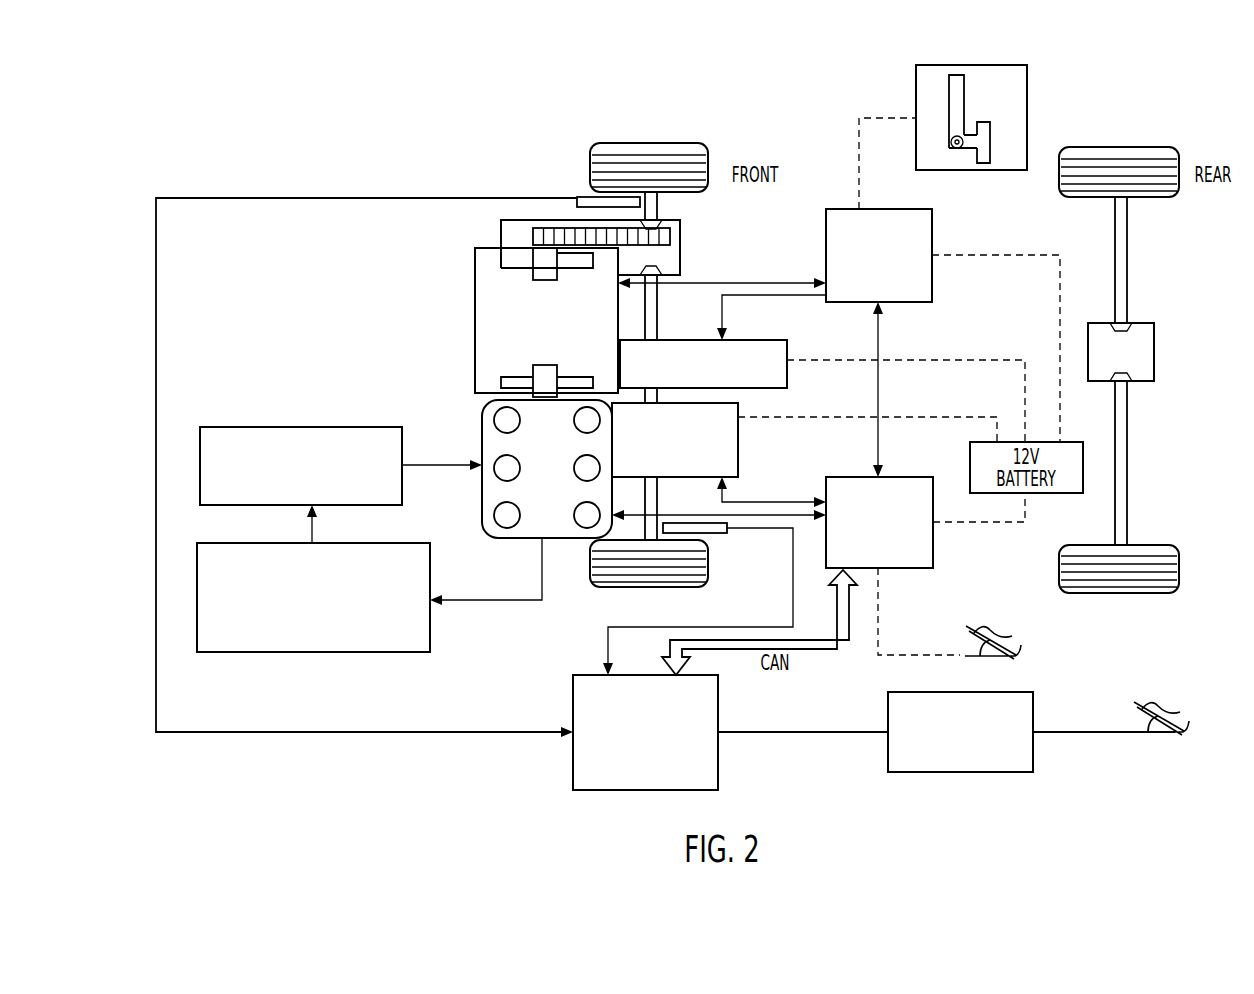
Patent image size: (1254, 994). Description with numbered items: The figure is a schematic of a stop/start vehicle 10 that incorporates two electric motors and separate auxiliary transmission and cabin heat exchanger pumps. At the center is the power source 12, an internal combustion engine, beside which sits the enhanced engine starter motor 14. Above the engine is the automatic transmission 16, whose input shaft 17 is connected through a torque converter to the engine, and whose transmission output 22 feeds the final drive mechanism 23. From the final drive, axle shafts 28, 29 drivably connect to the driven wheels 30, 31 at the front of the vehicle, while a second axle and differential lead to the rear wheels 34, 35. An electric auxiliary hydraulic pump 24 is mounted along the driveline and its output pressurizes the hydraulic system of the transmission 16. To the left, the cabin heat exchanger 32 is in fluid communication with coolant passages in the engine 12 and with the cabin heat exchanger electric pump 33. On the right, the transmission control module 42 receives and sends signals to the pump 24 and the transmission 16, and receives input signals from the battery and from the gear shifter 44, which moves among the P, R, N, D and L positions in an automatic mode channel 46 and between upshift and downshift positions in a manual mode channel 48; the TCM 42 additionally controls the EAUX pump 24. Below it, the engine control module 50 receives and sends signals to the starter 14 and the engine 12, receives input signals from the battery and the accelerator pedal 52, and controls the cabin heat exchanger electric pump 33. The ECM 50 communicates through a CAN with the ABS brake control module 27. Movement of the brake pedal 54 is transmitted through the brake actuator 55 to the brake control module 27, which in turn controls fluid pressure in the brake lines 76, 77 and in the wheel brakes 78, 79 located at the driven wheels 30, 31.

The stop/start vehicle 10 is at (702, 84).
The power source 12 is at (567, 542).
The enhanced engine starter motor 14 is at (738, 445).
The automatic transmission 16 is at (475, 303).
The input shaft 17 is at (545, 385).
The transmission output 22 is at (545, 270).
The final drive mechanism 23 is at (680, 240).
The electric auxiliary hydraulic pump 24 is at (788, 380).
The ABS module 27 is at (718, 695).
The axle shaft 28 is at (657, 203).
The axle shaft 29 is at (651, 537).
The driven wheel 30 is at (636, 143).
The driven wheel 31 is at (652, 586).
The cabin heat exchanger 32 is at (306, 427).
The cabin heat exchanger electric pump 33 is at (313, 653).
The rear wheel 34 is at (1148, 198).
The rear wheel 35 is at (1143, 544).
The transmission control module 42 is at (932, 272).
The gear shifter 44 is at (996, 100).
The automatic mode channel 46 is at (952, 78).
The manual mode channel 48 is at (983, 122).
The engine control module 50 is at (933, 548).
The accelerator pedal 52 is at (975, 633).
The brake pedal 54 is at (1142, 709).
The brake actuator 55 is at (885, 722).
The brake line 76 is at (525, 198).
The brake line 77 is at (745, 532).
The wheel brake 78 is at (582, 197).
The wheel brake 79 is at (718, 537).